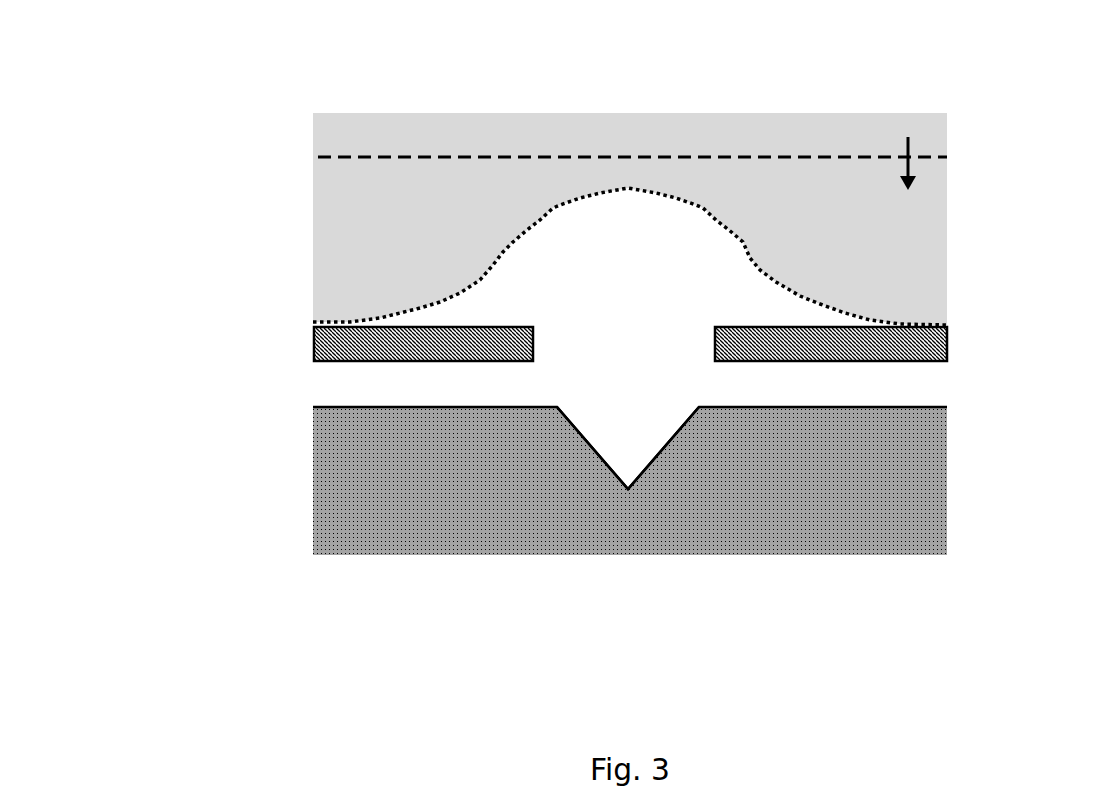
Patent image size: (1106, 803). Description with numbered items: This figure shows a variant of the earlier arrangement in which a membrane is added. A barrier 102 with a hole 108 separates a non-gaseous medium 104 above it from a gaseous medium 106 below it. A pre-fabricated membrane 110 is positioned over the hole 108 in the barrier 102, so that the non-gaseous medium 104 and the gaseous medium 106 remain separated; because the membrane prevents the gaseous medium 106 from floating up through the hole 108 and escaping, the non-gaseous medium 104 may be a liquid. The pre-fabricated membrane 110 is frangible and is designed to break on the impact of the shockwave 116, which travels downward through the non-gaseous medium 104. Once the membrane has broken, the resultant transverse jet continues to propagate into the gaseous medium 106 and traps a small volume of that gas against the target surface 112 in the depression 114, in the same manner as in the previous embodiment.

The barrier 102 is at (347, 343).
The non-gaseous medium 104 is at (408, 228).
The gaseous medium 106 is at (502, 385).
The hole 108 is at (613, 342).
The pre-fabricated membrane 110 is at (763, 273).
The target surface 112 is at (847, 450).
The depression 114 is at (642, 472).
The shockwave 116 is at (763, 157).